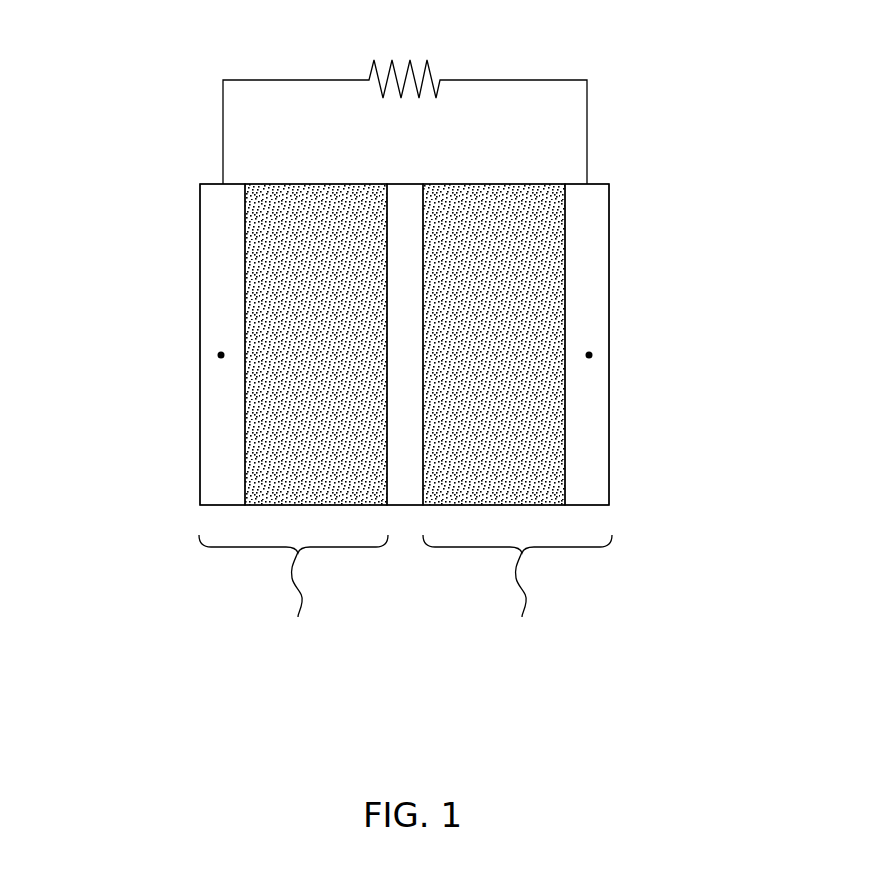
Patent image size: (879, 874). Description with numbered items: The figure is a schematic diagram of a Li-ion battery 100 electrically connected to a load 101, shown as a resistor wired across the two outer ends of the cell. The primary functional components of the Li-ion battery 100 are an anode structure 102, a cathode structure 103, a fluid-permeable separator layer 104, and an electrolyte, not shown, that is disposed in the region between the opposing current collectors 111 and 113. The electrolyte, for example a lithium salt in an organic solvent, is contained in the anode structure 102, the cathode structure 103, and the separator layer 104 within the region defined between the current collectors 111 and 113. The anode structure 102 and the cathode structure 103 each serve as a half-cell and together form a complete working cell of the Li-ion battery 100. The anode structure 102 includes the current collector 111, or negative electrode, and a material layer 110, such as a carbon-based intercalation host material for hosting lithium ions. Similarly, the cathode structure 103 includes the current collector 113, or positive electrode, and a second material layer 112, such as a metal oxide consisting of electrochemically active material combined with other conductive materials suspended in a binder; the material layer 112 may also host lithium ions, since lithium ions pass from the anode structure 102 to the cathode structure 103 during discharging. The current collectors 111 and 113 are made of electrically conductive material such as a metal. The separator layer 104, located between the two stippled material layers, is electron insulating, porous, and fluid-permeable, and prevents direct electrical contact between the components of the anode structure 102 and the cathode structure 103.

The Li-ion battery 100 is at (181, 132).
The load 101 is at (430, 70).
The anode structure 102 is at (293, 591).
The cathode structure 103 is at (517, 591).
The separator layer 104 is at (403, 184).
The material layer 110 is at (337, 356).
The current collector 111 is at (219, 355).
The second material layer 112 is at (507, 356).
The current collector 113 is at (591, 355).